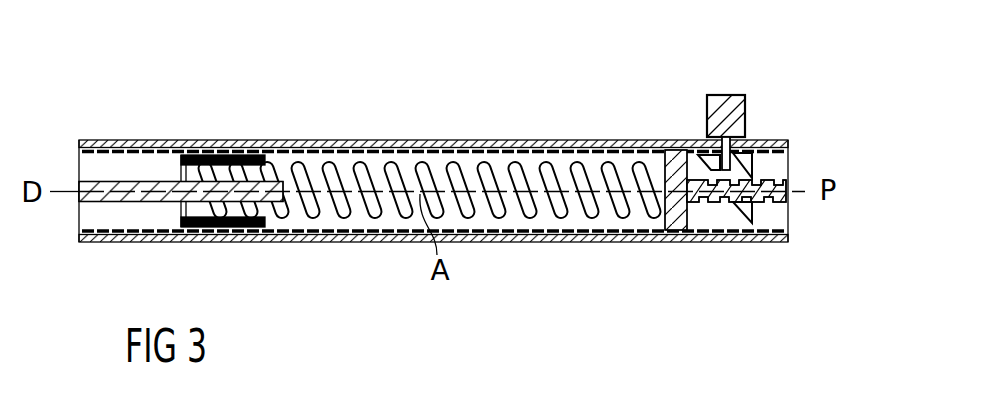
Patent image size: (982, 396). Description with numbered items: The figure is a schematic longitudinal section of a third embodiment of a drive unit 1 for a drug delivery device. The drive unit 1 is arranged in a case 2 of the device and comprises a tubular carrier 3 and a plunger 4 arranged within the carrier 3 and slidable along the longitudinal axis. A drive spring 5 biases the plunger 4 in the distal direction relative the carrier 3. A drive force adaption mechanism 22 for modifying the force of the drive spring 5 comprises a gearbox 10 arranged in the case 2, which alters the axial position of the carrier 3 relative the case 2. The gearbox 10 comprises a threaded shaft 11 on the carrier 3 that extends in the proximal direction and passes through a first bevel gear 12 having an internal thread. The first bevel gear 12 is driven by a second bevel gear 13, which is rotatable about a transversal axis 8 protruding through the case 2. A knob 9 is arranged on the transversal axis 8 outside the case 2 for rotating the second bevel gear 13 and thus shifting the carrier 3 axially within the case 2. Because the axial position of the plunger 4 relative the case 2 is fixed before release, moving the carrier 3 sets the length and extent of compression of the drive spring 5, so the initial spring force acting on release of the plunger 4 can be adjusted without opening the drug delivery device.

The drive unit 1 is at (353, 130).
The case 2 is at (186, 153).
The tubular carrier 3 is at (288, 149).
The plunger 4 is at (110, 185).
The drive spring 5 is at (422, 165).
The transversal axis 8 is at (737, 152).
The knob 9 is at (730, 100).
The gearbox 10 is at (702, 220).
The threaded shaft 11 is at (757, 204).
The first bevel gear 12 is at (745, 223).
The second bevel gear 13 is at (704, 153).
The drive force adaption mechanism 22 is at (774, 154).